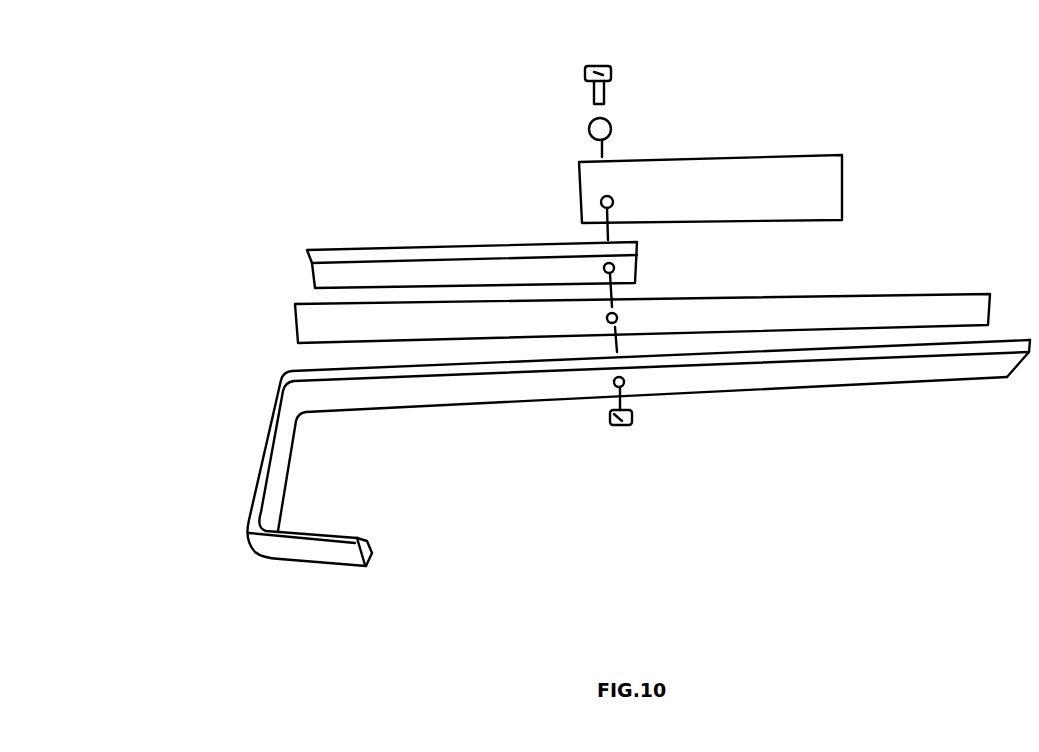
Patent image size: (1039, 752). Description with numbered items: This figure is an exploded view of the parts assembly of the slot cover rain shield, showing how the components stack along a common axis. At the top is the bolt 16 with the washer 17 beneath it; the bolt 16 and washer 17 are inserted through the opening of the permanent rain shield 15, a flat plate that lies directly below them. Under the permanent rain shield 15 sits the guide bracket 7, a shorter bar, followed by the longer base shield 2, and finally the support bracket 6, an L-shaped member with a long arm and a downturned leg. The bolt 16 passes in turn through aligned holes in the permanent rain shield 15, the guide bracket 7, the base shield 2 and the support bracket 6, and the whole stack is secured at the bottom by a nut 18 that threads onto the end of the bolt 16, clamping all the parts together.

The base shield 2 is at (328, 322).
The support bracket 6 is at (267, 469).
The guide bracket 7 is at (340, 272).
The permanent rain shield 15 is at (807, 190).
The bolt 16 is at (610, 77).
The washer 17 is at (611, 128).
The nut 18 is at (632, 419).